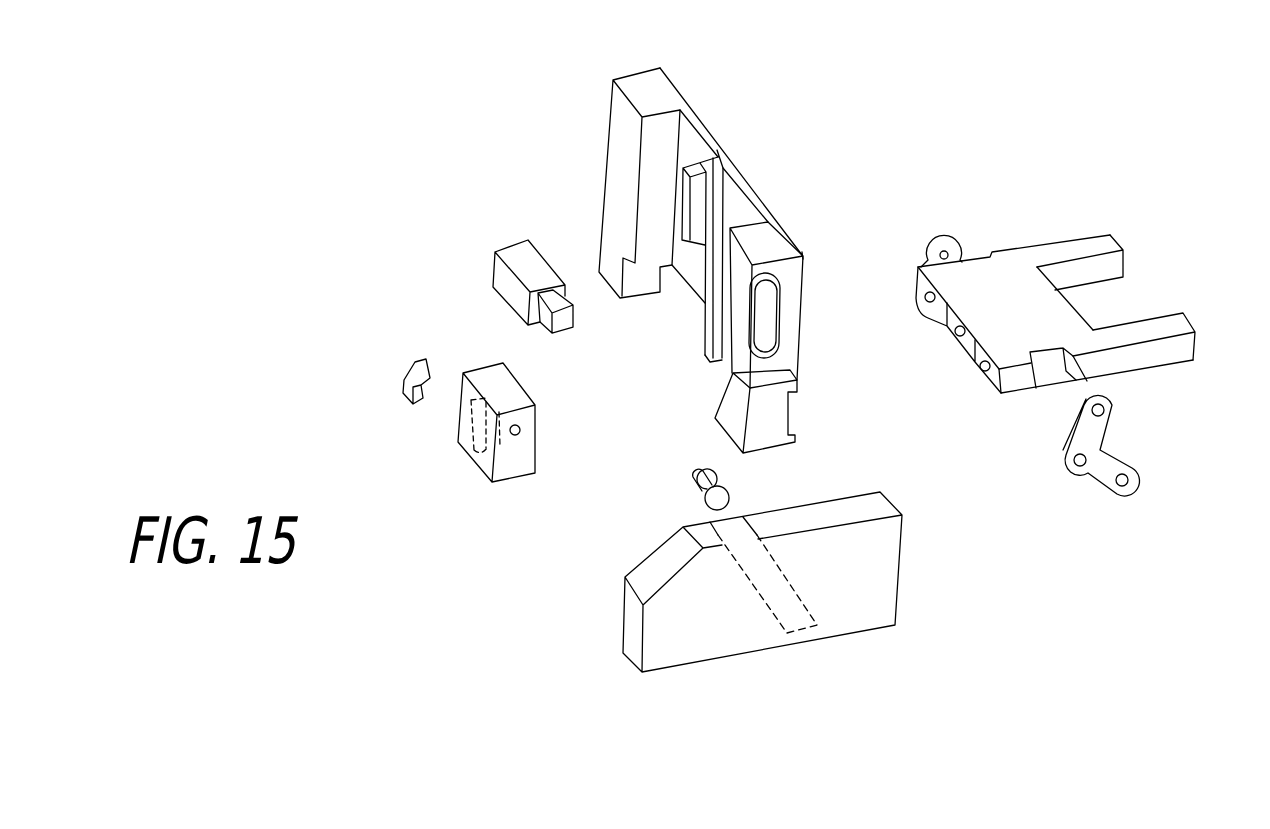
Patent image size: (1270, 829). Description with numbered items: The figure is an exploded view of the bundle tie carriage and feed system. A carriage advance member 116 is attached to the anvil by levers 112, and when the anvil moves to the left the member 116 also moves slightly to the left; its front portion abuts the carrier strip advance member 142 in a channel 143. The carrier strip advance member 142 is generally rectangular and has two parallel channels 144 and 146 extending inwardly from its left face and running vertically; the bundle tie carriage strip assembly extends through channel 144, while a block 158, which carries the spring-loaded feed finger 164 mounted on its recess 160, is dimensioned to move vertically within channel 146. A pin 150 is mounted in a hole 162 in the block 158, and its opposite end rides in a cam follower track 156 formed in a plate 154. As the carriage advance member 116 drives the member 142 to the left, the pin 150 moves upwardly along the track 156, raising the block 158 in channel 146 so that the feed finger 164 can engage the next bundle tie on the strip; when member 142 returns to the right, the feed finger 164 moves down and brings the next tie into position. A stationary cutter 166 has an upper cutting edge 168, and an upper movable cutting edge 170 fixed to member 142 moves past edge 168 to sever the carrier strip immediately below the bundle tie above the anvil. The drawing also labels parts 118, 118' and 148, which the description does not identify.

The lever 112 is at (1097, 430).
The carriage advance member 116 is at (1007, 273).
The arm of mounting plate 118 is at (1158, 327).
The second arm of mounting plate 118' is at (1116, 241).
The carrier strip advance member 142 is at (660, 88).
The channel 143 is at (806, 412).
The channel 144 is at (658, 163).
The channel 146 is at (737, 212).
The middle column of bracket 148 is at (705, 188).
The pin 150 is at (722, 493).
The plate 154 is at (677, 633).
The cam follower track 156 is at (798, 610).
The block 158 is at (518, 468).
The recess 160 is at (477, 437).
The hole 162 is at (521, 428).
The feed finger 164 is at (427, 362).
The stationary cutter 166 is at (508, 282).
The upper cutting edge 168 is at (575, 303).
The upper movable cutting edge 170 is at (683, 287).